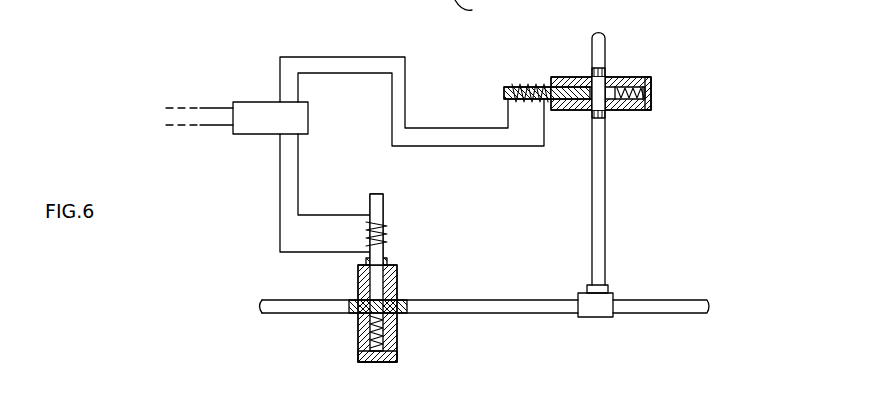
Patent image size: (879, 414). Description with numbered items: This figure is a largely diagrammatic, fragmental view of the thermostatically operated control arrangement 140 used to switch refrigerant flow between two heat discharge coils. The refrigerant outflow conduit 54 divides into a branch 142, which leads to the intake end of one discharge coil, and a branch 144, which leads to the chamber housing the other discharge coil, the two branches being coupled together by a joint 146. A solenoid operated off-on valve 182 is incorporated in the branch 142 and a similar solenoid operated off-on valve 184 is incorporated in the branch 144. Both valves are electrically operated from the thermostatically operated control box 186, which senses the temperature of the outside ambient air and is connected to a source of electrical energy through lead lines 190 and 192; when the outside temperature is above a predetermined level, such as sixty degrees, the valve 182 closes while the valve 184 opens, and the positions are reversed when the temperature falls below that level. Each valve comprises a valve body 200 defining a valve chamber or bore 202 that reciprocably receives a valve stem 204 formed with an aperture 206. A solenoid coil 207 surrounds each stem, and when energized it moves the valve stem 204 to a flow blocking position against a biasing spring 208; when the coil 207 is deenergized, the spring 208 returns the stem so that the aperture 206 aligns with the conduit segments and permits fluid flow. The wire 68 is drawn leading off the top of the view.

The refrigerant outflow conduit 54 is at (658, 305).
The wire 68 is at (476, 9).
The thermostatically operated control arrangement 140 is at (152, 56).
The branch 142 is at (600, 182).
The branch 144 is at (537, 307).
The joint 146 is at (603, 293).
The solenoid operated off-on valve 182 is at (645, 56).
The solenoid operated off-on valve 184 is at (415, 243).
The thermostatically operated control box 186 is at (257, 90).
The lead line 190 is at (218, 106).
The lead line 192 is at (222, 126).
The valve body 200 is at (652, 94).
The valve chamber or bore 202 is at (580, 110).
The valve stem 204 is at (572, 77).
The aperture 206 is at (613, 75).
The solenoid coil 207 is at (528, 86).
The biasing spring 208 is at (642, 77).